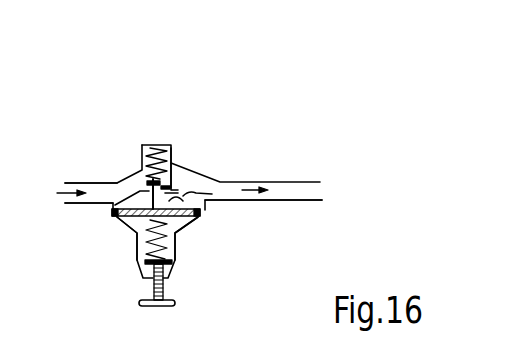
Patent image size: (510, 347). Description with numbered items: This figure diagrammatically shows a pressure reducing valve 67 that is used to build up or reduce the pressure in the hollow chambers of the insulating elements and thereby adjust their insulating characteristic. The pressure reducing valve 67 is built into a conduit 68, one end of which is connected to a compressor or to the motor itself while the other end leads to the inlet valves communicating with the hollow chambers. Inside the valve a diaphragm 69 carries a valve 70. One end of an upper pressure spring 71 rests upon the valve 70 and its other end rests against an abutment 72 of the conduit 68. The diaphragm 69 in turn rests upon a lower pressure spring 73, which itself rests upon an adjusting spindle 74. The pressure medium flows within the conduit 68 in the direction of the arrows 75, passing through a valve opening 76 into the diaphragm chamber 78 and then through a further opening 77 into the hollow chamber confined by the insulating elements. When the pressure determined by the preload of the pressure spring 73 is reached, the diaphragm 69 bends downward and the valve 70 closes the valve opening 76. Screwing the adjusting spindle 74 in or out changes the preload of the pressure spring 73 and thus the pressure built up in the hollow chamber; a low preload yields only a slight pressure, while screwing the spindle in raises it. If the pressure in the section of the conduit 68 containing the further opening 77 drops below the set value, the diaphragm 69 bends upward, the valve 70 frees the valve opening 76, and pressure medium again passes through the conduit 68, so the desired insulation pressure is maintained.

The pressure reducing valve 67 is at (188, 158).
The conduit 68 is at (73, 182).
The diaphragm 69 is at (118, 220).
The valve 70 is at (190, 222).
The pressure spring 71 is at (169, 146).
The abutment 72 is at (142, 143).
The pressure spring 73 is at (148, 253).
The adjusting spindle 74 is at (164, 287).
The arrows 75 is at (56, 197).
The valve opening 76 is at (180, 197).
The further opening 77 is at (217, 201).
The diaphragm chamber 78 is at (160, 221).